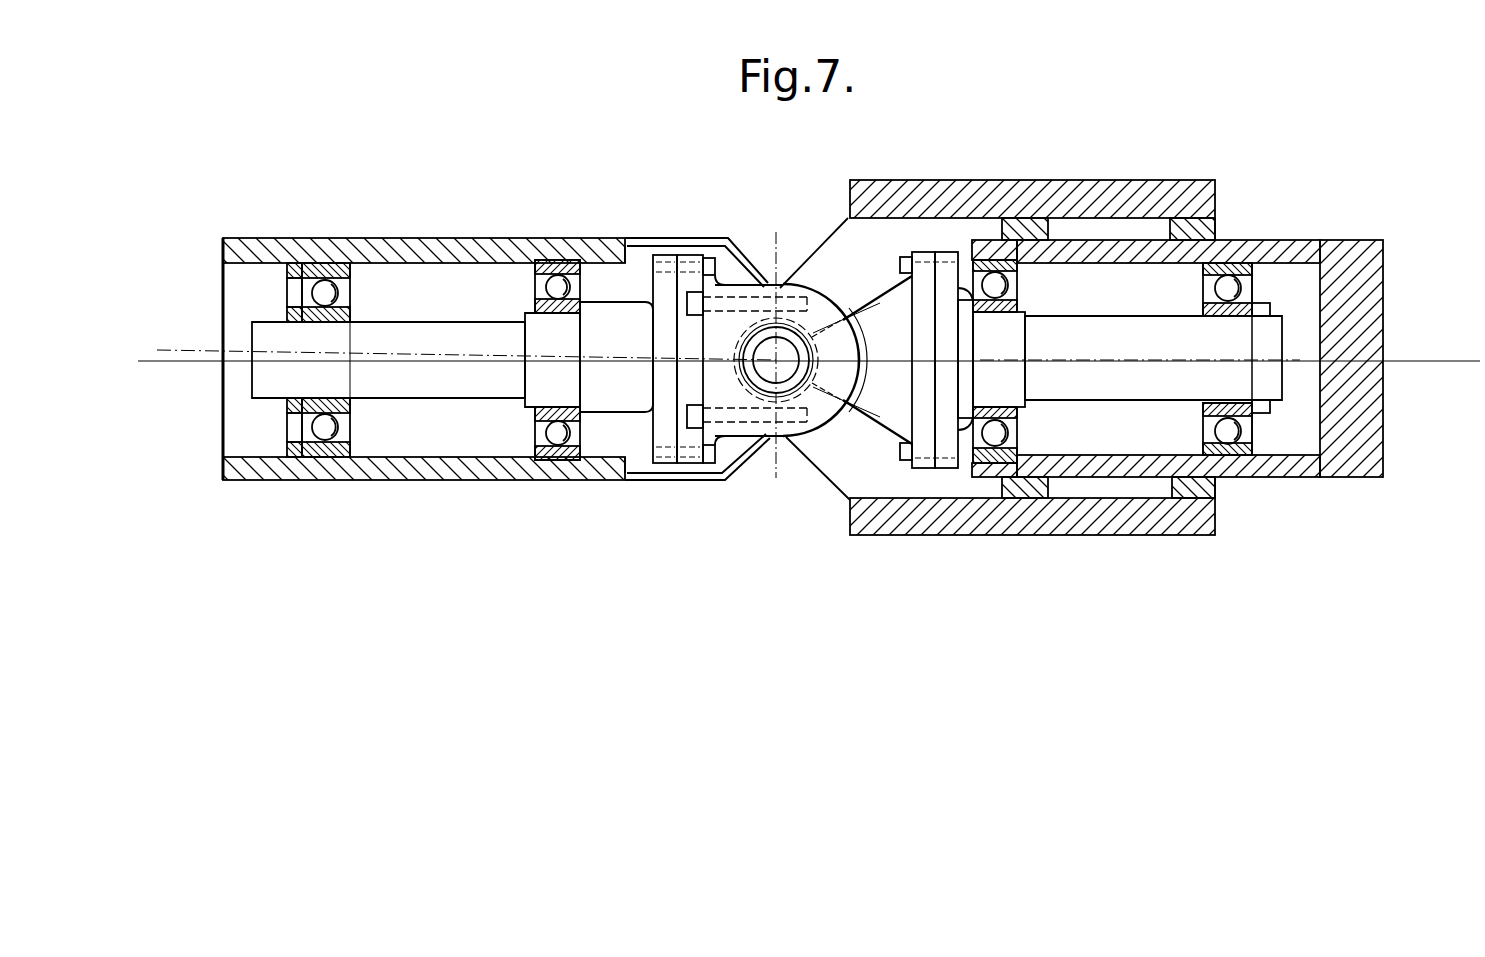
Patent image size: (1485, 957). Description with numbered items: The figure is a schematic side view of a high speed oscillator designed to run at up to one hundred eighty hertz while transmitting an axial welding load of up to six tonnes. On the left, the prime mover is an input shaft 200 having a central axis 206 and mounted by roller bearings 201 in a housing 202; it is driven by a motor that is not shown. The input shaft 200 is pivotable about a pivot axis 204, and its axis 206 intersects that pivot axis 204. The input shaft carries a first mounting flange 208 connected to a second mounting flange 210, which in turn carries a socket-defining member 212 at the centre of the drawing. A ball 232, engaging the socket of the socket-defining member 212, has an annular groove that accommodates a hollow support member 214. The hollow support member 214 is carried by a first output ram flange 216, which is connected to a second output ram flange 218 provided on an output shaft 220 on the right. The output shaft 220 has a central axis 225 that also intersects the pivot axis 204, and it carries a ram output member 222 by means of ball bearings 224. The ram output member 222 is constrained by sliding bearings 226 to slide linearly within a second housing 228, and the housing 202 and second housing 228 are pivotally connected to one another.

The input shaft 200 is at (470, 383).
The roller bearings 201 is at (338, 262).
The housing 202 is at (440, 258).
The pivot axis 204 is at (773, 357).
The central axis 206 is at (213, 365).
The first mounting flange 208 is at (665, 432).
The second mounting flange 210 is at (690, 435).
The socket-defining member 212 is at (733, 402).
The hollow support member 214 is at (893, 410).
The first output ram flange 216 is at (925, 432).
The second output ram flange 218 is at (945, 432).
The output shaft 220 is at (1057, 325).
The ram output member 222 is at (1352, 270).
The ball bearings 224 is at (1232, 275).
The central axis 225 is at (1177, 360).
The sliding bearings 226 is at (1222, 488).
The second housing 228 is at (1220, 525).
The ball 232 is at (796, 393).